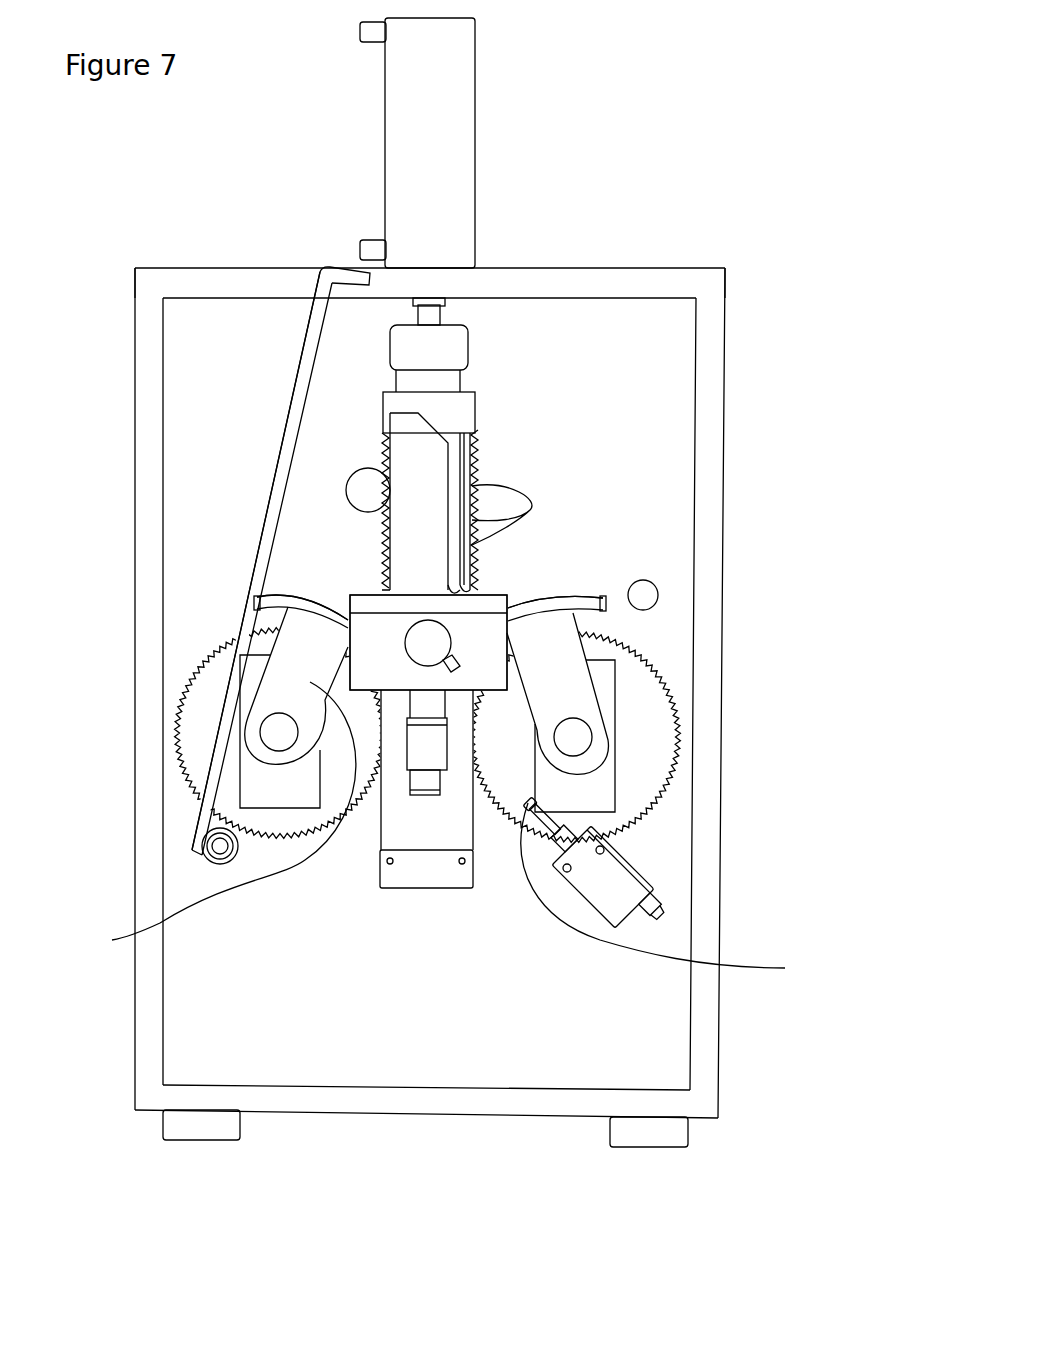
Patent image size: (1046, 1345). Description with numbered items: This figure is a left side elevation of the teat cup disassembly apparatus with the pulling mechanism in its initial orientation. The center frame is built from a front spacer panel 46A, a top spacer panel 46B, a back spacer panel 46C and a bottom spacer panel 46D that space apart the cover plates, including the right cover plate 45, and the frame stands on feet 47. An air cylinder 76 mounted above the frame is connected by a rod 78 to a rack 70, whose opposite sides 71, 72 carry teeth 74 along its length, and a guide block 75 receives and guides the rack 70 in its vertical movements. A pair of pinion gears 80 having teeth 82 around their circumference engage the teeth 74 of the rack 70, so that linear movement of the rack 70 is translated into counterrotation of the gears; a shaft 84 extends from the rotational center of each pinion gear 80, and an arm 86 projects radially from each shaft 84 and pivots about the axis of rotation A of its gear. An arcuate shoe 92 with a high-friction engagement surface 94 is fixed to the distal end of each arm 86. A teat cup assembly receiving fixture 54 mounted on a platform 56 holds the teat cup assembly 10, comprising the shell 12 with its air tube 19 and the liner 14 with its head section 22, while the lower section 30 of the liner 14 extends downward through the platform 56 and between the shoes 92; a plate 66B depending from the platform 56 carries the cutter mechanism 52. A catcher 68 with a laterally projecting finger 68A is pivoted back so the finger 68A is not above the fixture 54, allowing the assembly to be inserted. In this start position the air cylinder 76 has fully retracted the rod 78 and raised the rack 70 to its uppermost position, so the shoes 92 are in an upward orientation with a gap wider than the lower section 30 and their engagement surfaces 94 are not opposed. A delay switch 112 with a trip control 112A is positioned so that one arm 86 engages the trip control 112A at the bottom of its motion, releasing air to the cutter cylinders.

The air cylinder 76 is at (435, 153).
The rod 78 is at (410, 316).
The finger 68A is at (340, 268).
The catcher 68 is at (296, 378).
The teat cup assembly 10 is at (474, 343).
The top spacer panel 46B is at (606, 283).
The back spacer panel 46C is at (148, 488).
The front spacer panel 46A is at (705, 998).
The bottom spacer panel 46D is at (400, 1098).
The feet 47 is at (178, 1122).
The head section 22 is at (396, 345).
The shell 12 is at (476, 385).
The rack 70 is at (392, 402).
The side of the rack 71 is at (385, 450).
The side of the rack 72 is at (477, 460).
The teeth 74 is at (347, 487).
The teat cup assembly receiving fixture 54 is at (418, 546).
The right cover plate 45 is at (625, 447).
The air tube 19 is at (473, 580).
The platform 56 is at (368, 596).
The plate 66B is at (403, 674).
The cutter mechanism 52 is at (455, 618).
The engagement surface 94 is at (283, 594).
The shoe 92 is at (313, 612).
The teeth 82 is at (177, 717).
The pinion gear 80 is at (203, 722).
The shaft 84 is at (290, 748).
The arm 86 is at (340, 830).
The axis of rotation A is at (747, 783).
The guide block 75 is at (418, 827).
The lower section 30 is at (405, 778).
The liner 14 is at (441, 798).
The delay switch 112 is at (618, 897).
The trip control 112A is at (680, 968).